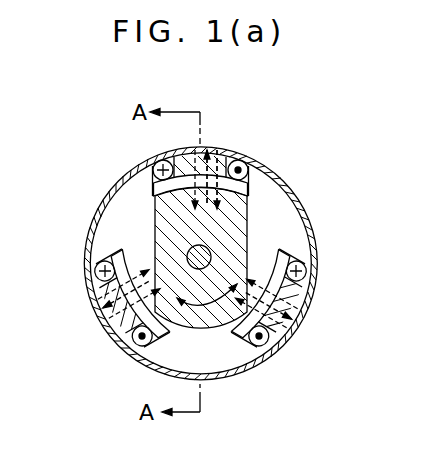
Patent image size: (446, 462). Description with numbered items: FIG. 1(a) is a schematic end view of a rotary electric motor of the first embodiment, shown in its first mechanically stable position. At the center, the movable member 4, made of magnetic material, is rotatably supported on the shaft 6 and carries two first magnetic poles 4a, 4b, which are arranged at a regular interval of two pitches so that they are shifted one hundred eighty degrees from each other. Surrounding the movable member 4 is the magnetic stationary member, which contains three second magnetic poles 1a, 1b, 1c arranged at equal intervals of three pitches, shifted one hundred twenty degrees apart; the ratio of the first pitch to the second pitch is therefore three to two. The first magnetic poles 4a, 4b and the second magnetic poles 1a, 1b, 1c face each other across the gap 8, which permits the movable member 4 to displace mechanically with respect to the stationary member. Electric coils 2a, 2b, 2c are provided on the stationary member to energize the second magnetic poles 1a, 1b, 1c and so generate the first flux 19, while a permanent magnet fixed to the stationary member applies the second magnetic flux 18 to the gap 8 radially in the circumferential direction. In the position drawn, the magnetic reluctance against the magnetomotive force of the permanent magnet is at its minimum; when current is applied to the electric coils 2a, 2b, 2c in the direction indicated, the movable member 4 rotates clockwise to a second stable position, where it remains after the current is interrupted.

The movable member 4 is at (249, 238).
The first magnetic pole 4a is at (249, 210).
The first magnetic pole 4b is at (249, 346).
The shaft 6 is at (190, 251).
The gap 8 is at (150, 205).
The electric coil 2a is at (152, 163).
The electric coil 2b is at (305, 265).
The electric coil 2c is at (95, 277).
The second magnetic pole 1a is at (223, 238).
The second magnetic pole 1b is at (296, 307).
The second magnetic pole 1c is at (108, 300).
The second magnetic flux 18 is at (218, 150).
The first flux 19 is at (207, 150).